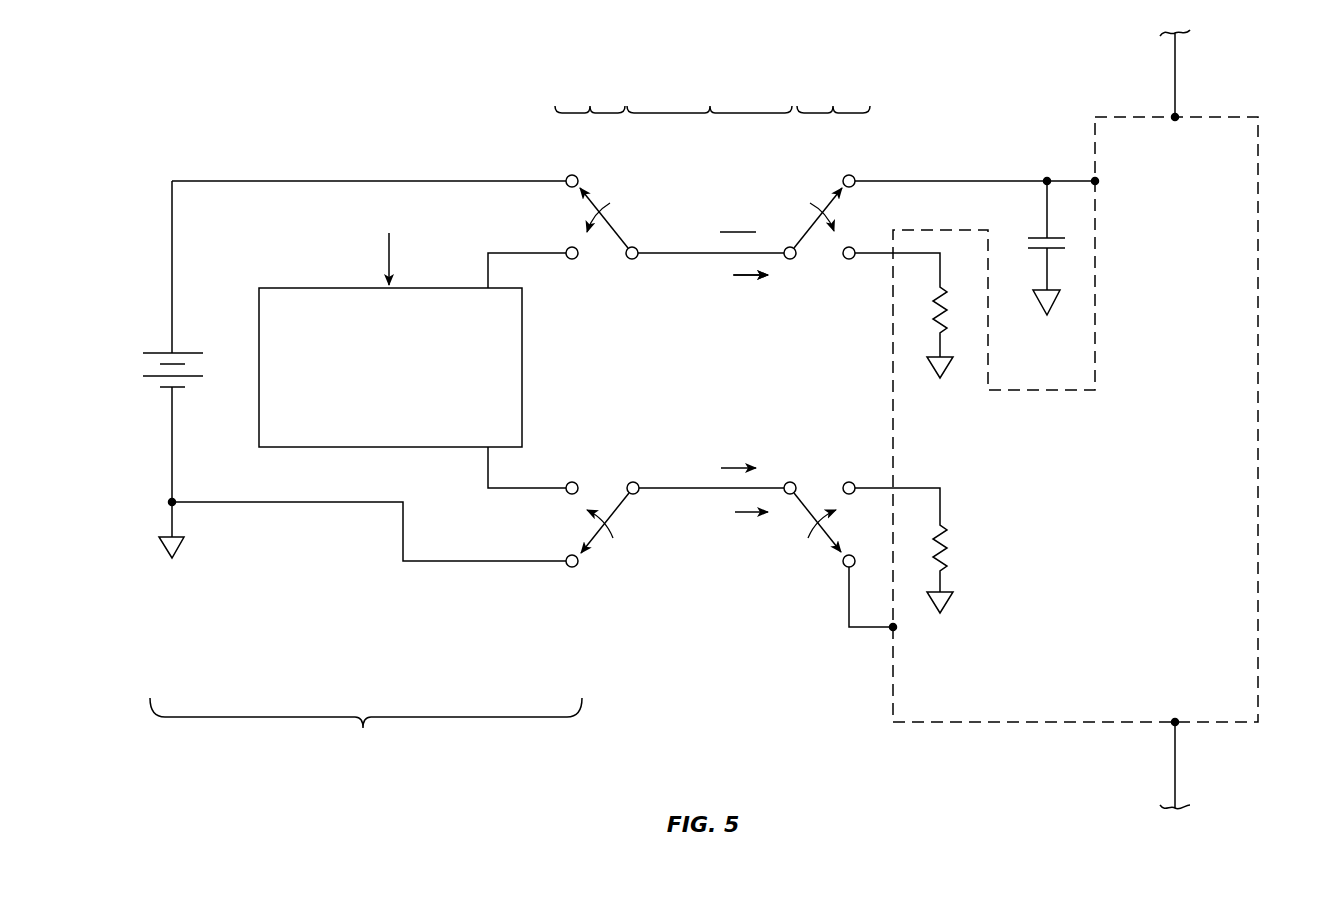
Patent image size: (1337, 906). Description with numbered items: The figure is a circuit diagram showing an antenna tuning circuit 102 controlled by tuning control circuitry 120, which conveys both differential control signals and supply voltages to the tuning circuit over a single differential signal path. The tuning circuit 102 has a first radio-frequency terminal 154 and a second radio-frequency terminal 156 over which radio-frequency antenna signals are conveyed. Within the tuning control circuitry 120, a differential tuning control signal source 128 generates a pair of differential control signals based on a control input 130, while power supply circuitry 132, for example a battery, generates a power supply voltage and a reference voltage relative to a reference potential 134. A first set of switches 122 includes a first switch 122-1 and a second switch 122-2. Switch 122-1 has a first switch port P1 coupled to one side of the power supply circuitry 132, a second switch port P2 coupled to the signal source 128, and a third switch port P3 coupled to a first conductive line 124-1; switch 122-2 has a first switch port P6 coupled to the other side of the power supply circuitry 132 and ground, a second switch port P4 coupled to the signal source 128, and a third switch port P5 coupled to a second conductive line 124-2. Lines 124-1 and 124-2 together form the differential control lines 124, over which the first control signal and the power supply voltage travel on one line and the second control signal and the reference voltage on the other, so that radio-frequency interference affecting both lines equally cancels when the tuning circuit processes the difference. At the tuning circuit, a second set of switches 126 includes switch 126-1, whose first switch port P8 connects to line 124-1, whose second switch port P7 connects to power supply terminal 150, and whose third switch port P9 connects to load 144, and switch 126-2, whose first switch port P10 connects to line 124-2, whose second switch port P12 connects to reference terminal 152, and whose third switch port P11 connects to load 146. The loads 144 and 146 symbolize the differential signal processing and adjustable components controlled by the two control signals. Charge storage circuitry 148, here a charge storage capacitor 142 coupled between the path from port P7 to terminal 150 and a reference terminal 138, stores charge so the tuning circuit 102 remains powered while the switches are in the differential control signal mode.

The tuning circuit 102 is at (1228, 543).
The tuning control circuitry 120 is at (366, 725).
The first set of switches 122 is at (590, 96).
The first switch 122-1 is at (608, 234).
The second switch 122-2 is at (596, 532).
The differential control lines 124 is at (709, 96).
The first conductive line 124-1 is at (699, 302).
The second conductive line 124-2 is at (684, 424).
The second set of switches 126 is at (833, 96).
The first switch 126-1 is at (830, 220).
The second switch 126-2 is at (811, 550).
The differential tuning control signal source 128 is at (292, 288).
The control input 130 is at (391, 250).
The power supply circuitry 132 is at (190, 395).
The reference potential 134 is at (182, 544).
The reference terminal 138 is at (1045, 312).
The charge storage capacitor 142 is at (1078, 245).
The load 144 is at (955, 305).
The load 146 is at (960, 533).
The charge storage circuitry 148 is at (1046, 160).
The power supply terminal 150 is at (1099, 181).
The reference terminal 152 is at (897, 628).
The first radio-frequency terminal 154 is at (1179, 114).
The second radio-frequency terminal 156 is at (1179, 726).
The first switch port P1 is at (577, 175).
The second switch port P2 is at (571, 259).
The third switch port P3 is at (637, 248).
The second switch port P4 is at (571, 482).
The third switch port P5 is at (632, 482).
The first switch port P6 is at (571, 567).
The second switch port P7 is at (853, 175).
The first switch port P8 is at (790, 259).
The third switch port P9 is at (849, 259).
The first switch port P10 is at (789, 482).
The third switch port P11 is at (848, 482).
The second switch port P12 is at (842, 562).